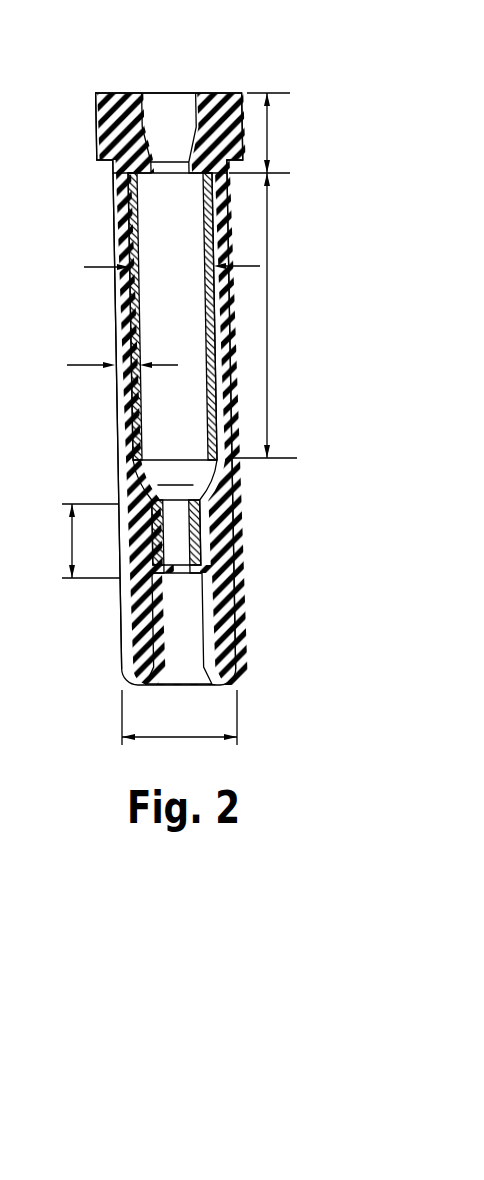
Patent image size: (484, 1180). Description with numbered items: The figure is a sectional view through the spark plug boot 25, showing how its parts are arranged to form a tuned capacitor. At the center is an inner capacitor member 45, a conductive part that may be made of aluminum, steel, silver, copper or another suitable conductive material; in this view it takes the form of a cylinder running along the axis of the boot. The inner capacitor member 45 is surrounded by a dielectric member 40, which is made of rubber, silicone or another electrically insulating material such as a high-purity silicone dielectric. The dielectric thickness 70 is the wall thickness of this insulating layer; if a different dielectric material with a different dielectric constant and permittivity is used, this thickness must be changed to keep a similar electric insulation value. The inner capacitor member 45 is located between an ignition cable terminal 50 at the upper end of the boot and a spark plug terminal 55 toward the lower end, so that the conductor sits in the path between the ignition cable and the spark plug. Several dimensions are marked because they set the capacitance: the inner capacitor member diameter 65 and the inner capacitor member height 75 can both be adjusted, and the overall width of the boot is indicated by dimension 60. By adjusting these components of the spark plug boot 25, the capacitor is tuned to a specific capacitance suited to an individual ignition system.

The spark plug boot 25 is at (198, 70).
The dielectric member 40 is at (97, 133).
The inner capacitor member 45 is at (113, 197).
The ignition cable terminal 50 is at (269, 135).
The spark plug terminal 55 is at (72, 540).
The outer diameter 60 is at (172, 737).
The inner capacitor member diameter 65 is at (84, 267).
The dielectric thickness 70 is at (75, 365).
The inner capacitor member height 75 is at (269, 295).